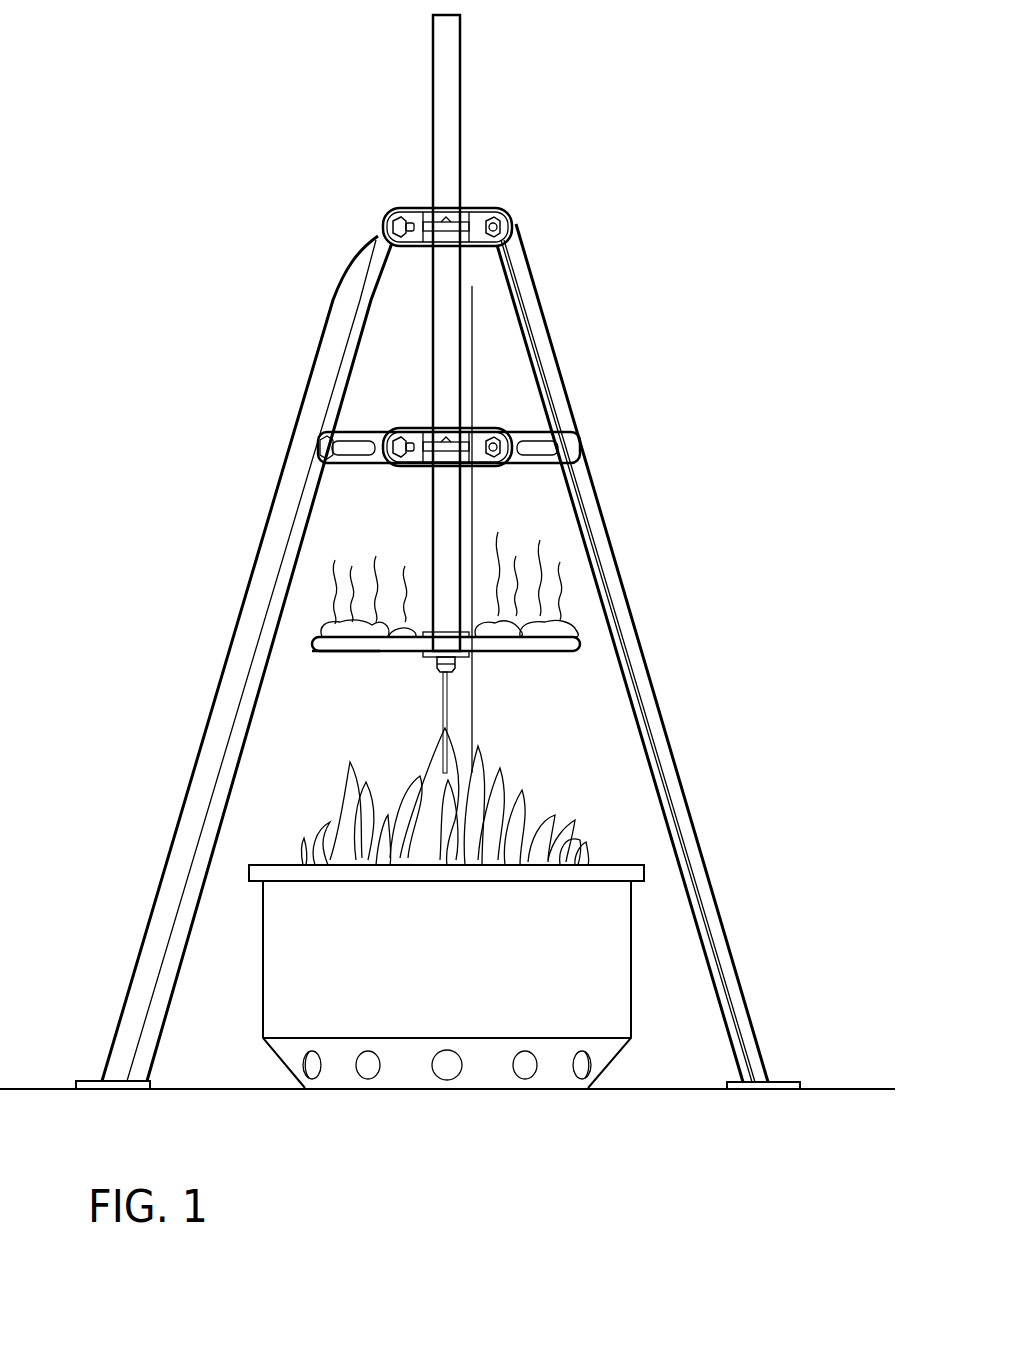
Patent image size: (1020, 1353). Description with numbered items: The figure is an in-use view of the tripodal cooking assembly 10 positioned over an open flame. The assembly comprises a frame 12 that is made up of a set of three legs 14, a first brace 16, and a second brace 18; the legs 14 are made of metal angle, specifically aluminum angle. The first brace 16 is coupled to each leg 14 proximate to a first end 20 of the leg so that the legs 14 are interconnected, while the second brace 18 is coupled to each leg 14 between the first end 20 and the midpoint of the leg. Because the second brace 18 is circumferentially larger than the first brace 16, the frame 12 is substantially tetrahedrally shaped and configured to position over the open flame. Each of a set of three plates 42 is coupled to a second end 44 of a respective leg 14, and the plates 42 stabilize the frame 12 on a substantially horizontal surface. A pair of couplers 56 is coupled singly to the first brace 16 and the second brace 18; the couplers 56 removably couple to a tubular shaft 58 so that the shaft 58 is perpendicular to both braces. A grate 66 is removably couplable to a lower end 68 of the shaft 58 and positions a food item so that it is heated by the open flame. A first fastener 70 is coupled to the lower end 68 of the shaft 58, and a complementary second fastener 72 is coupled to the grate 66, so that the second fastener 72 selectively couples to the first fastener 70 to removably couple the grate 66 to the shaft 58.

The tripodal cooking assembly 10 is at (625, 228).
The frame 12 is at (475, 370).
The legs 14 is at (516, 353).
The first brace 16 is at (489, 210).
The second brace 18 is at (507, 432).
The first end 20 is at (388, 210).
The plates 42 is at (757, 1088).
The second end 44 is at (762, 1080).
The couplers 56 is at (445, 232).
The shaft 58 is at (438, 512).
The grate 66 is at (580, 641).
The lower end 68 is at (330, 653).
The first fastener 70 is at (330, 653).
The second fastener 72 is at (445, 656).